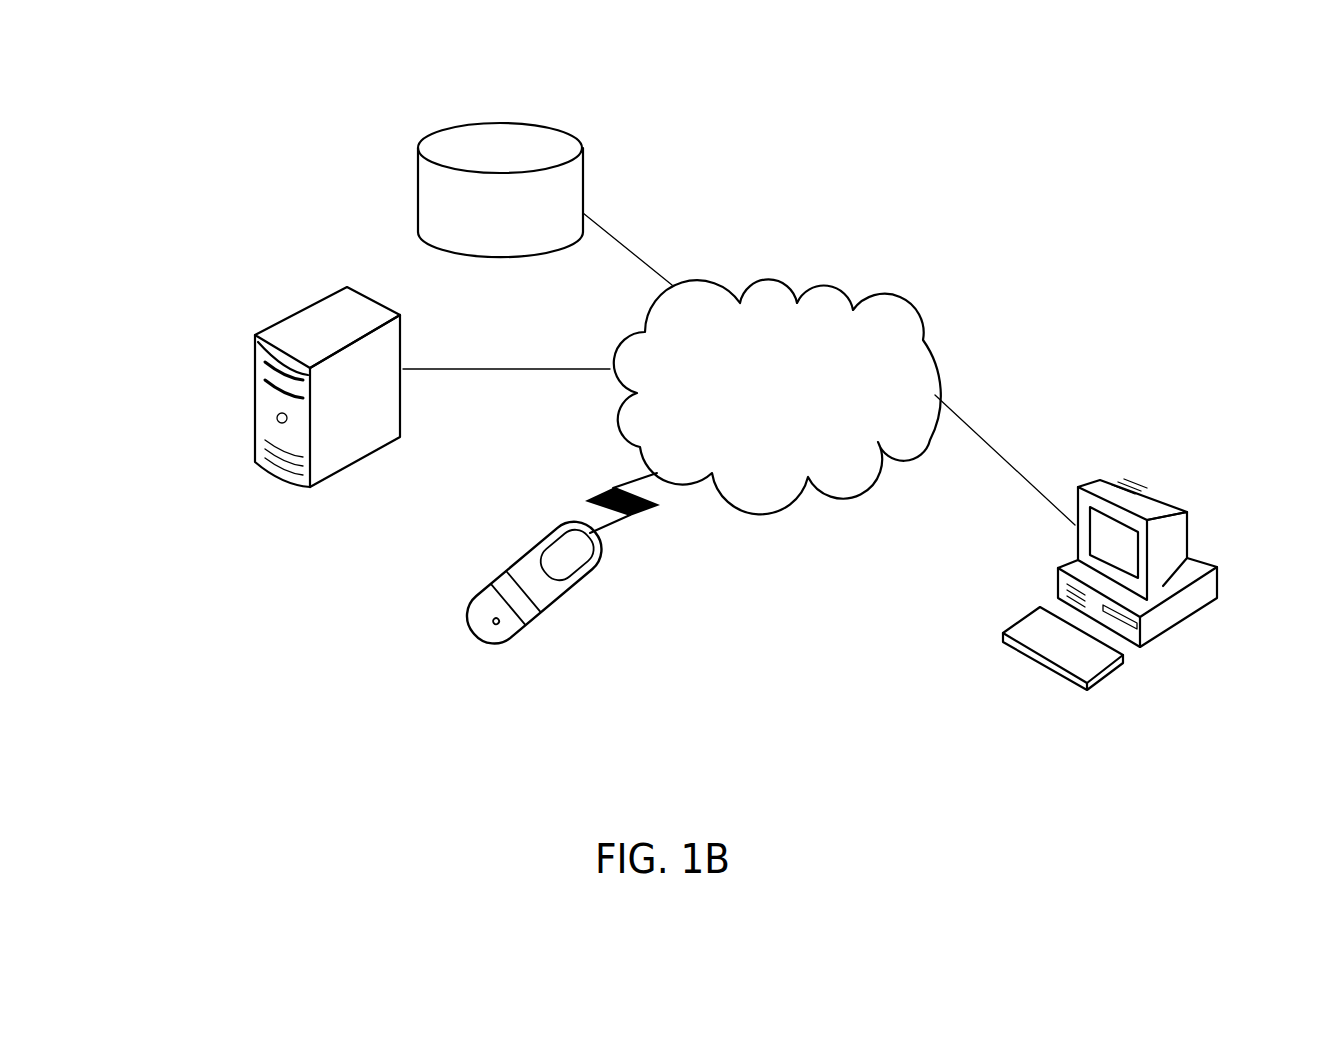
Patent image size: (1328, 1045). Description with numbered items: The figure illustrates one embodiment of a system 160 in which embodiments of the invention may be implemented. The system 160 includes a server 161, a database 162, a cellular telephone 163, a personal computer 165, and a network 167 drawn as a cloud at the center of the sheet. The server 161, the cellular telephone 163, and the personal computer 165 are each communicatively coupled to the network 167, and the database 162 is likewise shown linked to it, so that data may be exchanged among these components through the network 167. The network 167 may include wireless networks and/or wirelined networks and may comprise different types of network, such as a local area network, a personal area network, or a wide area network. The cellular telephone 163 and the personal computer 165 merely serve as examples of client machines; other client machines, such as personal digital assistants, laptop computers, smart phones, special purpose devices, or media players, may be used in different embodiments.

The system 160 is at (925, 148).
The server 161 is at (315, 411).
The database 162 is at (468, 124).
The cellular telephone 163 is at (536, 623).
The personal computer 165 is at (1108, 628).
The network 167 is at (912, 396).